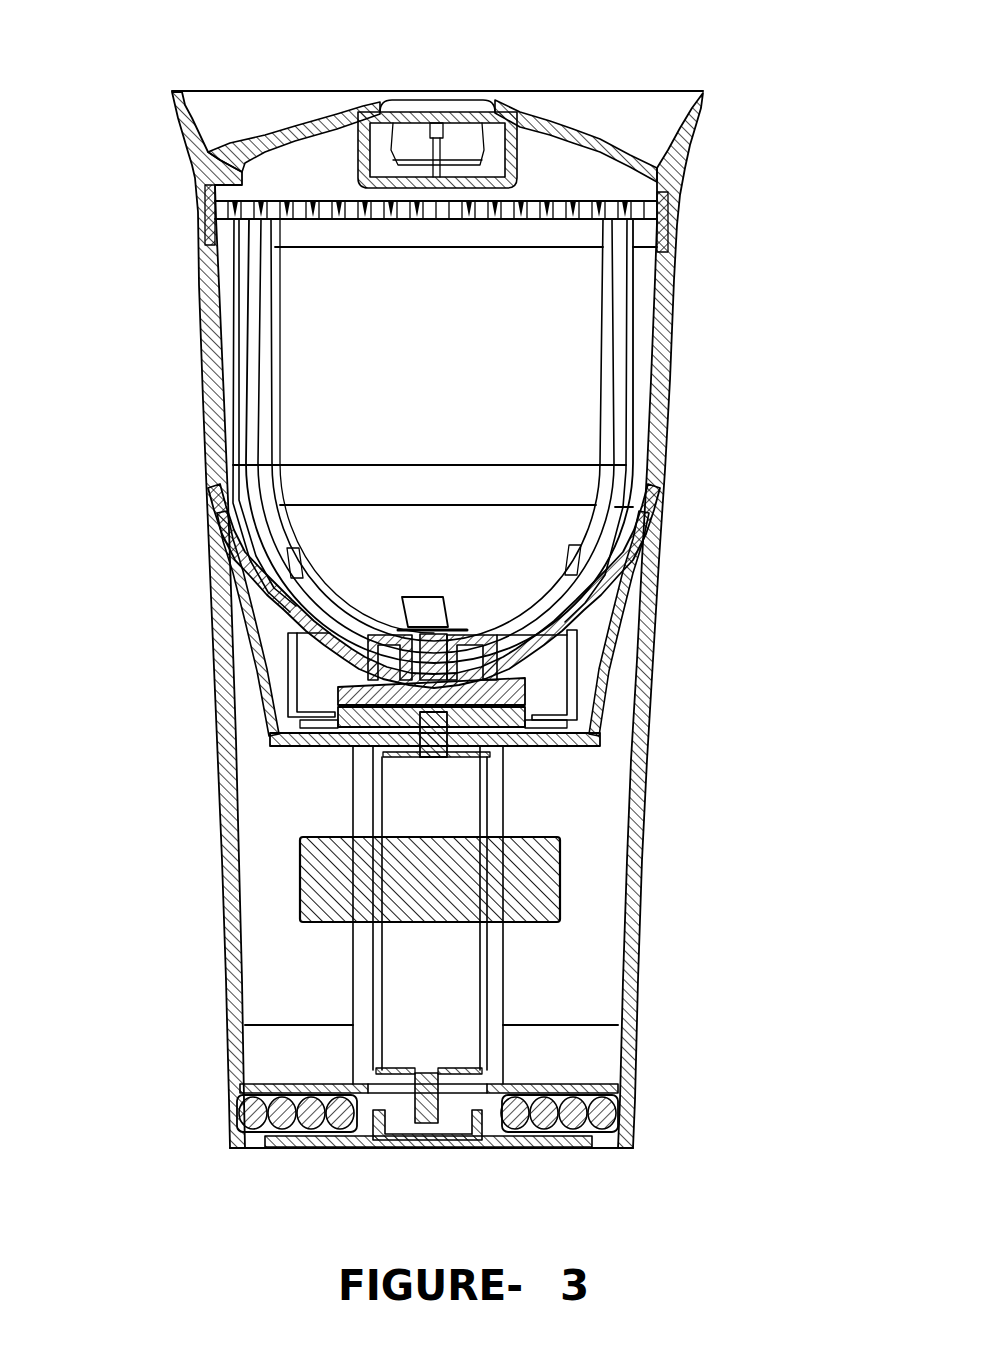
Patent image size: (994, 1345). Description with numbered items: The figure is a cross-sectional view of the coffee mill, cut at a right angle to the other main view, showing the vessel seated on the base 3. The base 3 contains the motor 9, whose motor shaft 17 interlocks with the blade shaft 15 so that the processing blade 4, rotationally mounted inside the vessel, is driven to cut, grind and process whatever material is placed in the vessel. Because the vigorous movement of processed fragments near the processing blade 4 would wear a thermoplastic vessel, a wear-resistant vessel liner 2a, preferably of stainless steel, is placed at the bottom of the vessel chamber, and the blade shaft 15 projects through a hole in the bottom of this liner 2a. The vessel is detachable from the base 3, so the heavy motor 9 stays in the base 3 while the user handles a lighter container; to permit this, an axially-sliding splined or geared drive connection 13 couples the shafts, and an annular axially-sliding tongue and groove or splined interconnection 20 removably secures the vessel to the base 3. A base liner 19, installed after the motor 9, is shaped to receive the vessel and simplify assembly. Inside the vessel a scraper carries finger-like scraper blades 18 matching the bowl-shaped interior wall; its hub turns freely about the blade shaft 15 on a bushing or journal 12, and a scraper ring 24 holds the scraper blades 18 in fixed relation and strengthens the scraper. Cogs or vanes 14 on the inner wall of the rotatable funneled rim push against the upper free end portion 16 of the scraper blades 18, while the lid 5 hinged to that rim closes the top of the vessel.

The wear-resistant vessel liner 2a is at (640, 533).
The base 3 is at (277, 978).
The processing blade 4 is at (402, 603).
The lid 5 is at (570, 133).
The motor 9 is at (550, 876).
The bushing or journal 12 is at (515, 655).
The drive connection 13 is at (540, 707).
The cogs or vanes 14 is at (288, 190).
The blade shaft 15 is at (348, 732).
The upper free end portion 16 is at (242, 228).
The motor shaft 17 is at (442, 746).
The scraper blades 18 is at (250, 387).
The base liner 19 is at (612, 627).
The splined interconnection 20 is at (225, 470).
The scraper ring 24 is at (346, 232).